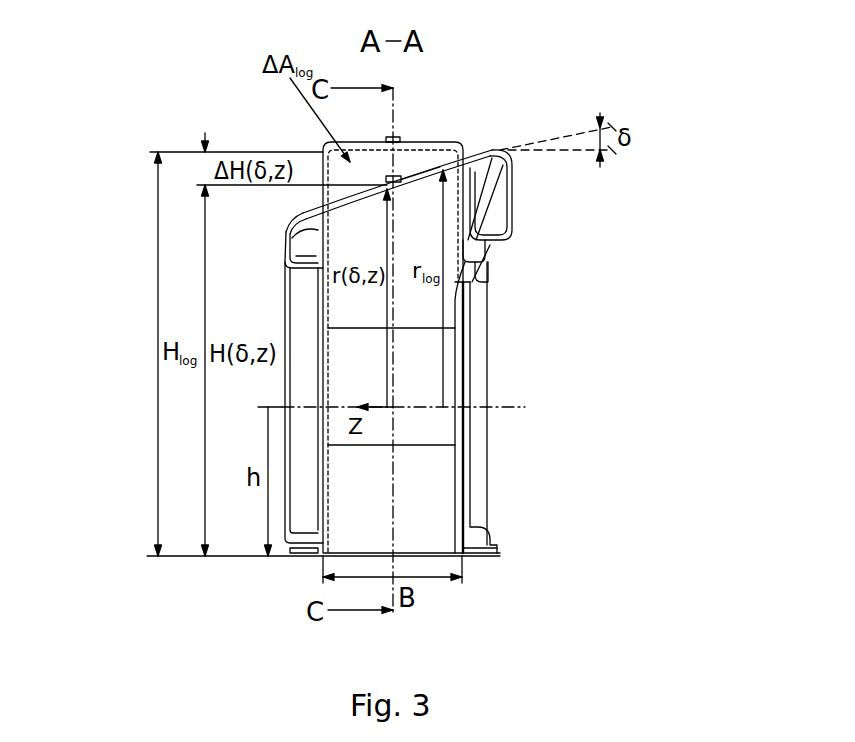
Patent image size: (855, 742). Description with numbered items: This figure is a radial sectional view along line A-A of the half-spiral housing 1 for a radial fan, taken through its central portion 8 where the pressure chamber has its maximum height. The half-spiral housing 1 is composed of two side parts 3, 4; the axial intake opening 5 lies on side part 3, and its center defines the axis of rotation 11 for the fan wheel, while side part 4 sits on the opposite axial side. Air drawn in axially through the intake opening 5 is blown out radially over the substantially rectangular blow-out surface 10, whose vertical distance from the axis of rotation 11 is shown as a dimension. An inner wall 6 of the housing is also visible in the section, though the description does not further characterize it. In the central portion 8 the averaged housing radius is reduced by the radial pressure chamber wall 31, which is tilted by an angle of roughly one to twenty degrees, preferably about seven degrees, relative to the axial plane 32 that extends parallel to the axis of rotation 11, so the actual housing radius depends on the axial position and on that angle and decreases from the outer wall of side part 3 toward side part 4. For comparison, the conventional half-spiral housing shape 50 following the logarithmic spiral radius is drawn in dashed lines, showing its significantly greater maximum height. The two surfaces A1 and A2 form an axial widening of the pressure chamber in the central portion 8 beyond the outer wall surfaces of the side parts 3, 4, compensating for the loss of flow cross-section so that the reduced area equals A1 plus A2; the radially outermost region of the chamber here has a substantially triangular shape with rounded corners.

The half-spiral housing 1 is at (137, 72).
The side part 3 is at (490, 150).
The side part 4 is at (305, 212).
The axial intake opening 5 is at (495, 443).
The inner wall 6 is at (477, 280).
The central portion 8 is at (300, 216).
The blow-out surface 10 is at (397, 556).
The axis of rotation 11 is at (422, 406).
The radial pressure chamber wall 31 is at (415, 184).
The axial plane 32 is at (605, 150).
The conventional half-spiral housing shape 50 is at (417, 135).
The surface A1 is at (484, 192).
The surface A2 is at (306, 247).